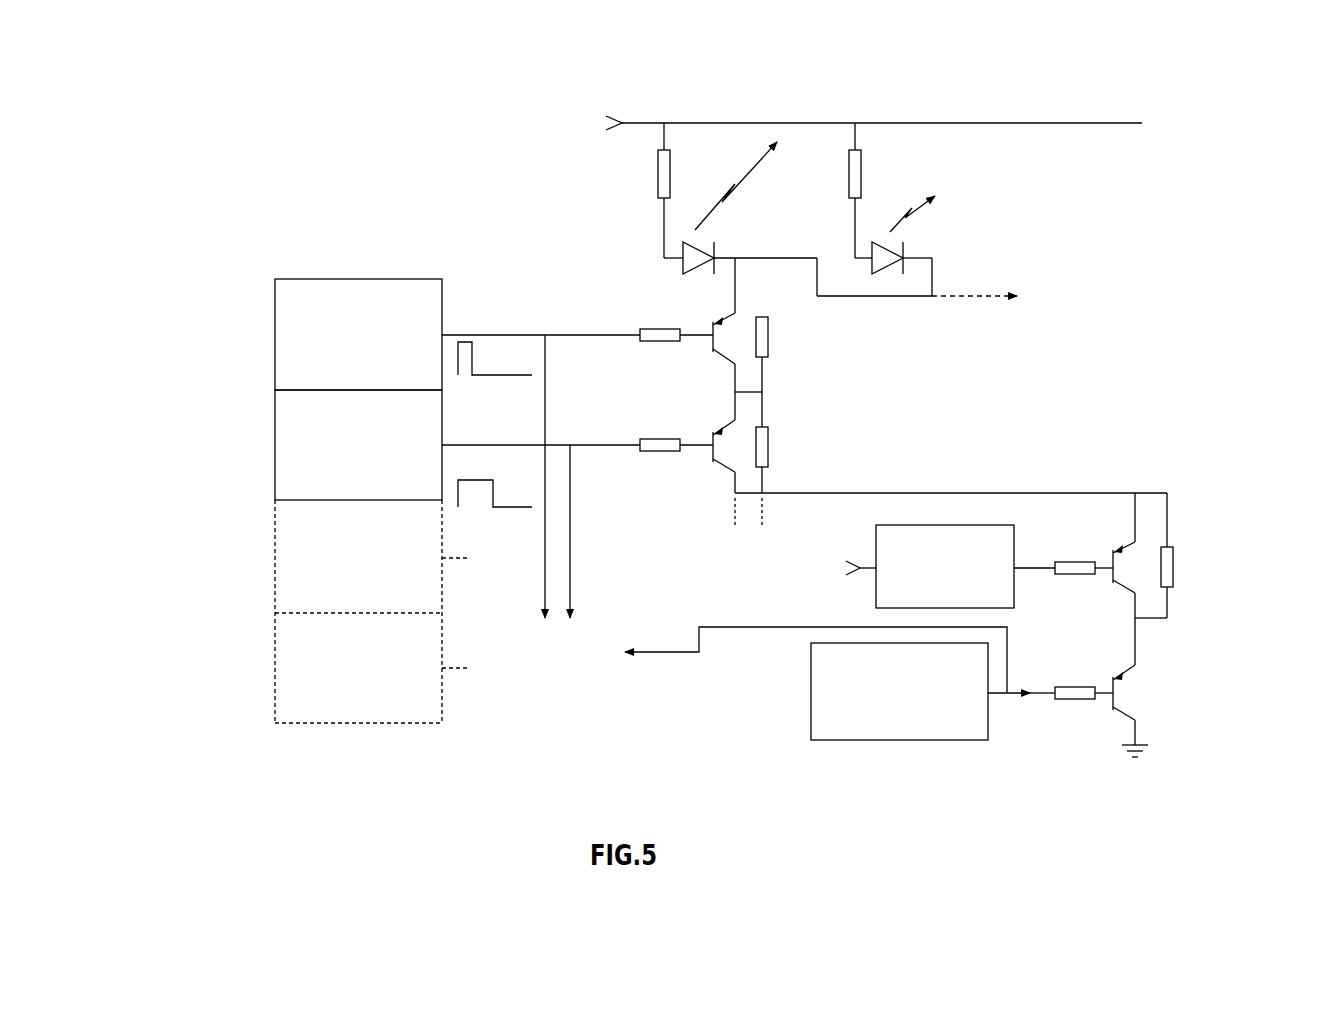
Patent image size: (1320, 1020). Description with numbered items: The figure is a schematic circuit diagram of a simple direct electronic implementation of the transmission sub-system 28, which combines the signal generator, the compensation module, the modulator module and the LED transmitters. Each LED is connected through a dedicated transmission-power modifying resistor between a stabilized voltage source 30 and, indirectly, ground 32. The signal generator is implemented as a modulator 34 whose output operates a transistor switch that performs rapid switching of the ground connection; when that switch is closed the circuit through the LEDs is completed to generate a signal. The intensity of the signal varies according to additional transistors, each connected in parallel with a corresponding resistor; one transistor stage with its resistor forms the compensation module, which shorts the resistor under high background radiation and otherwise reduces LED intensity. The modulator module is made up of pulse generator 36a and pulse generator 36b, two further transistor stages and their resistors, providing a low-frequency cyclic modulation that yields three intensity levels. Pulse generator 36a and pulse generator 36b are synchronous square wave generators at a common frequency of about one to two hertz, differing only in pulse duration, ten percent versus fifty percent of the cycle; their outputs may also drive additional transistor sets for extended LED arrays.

The transmission sub-system 28 is at (1266, 146).
The stabilized voltage source 30 is at (598, 114).
The ground 32 is at (1134, 762).
The modulator 34 is at (889, 742).
The pulse generator 36a is at (275, 333).
The pulse generator 36b is at (275, 448).